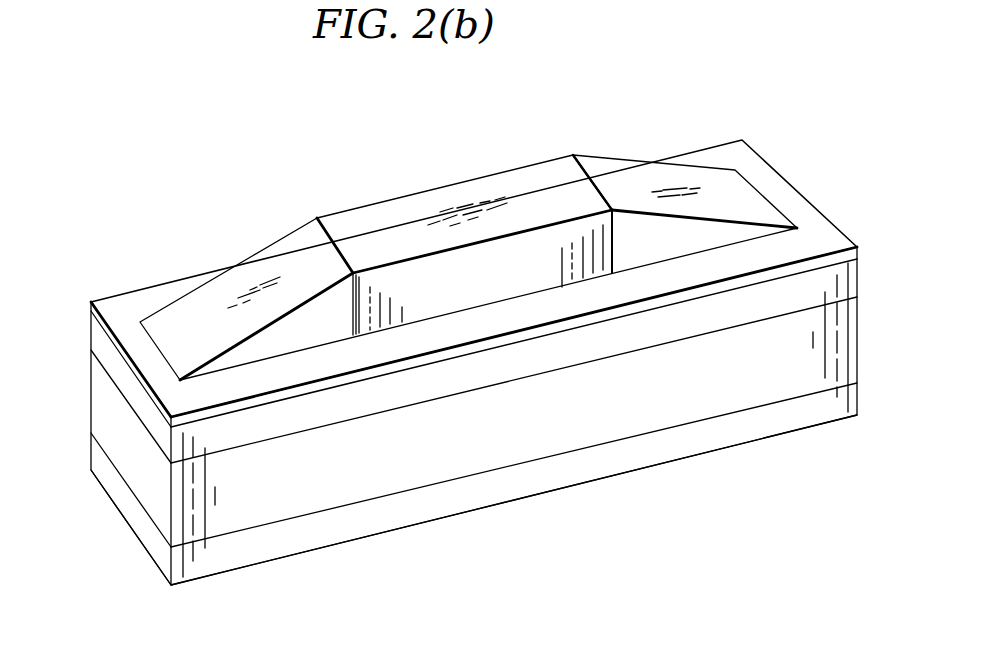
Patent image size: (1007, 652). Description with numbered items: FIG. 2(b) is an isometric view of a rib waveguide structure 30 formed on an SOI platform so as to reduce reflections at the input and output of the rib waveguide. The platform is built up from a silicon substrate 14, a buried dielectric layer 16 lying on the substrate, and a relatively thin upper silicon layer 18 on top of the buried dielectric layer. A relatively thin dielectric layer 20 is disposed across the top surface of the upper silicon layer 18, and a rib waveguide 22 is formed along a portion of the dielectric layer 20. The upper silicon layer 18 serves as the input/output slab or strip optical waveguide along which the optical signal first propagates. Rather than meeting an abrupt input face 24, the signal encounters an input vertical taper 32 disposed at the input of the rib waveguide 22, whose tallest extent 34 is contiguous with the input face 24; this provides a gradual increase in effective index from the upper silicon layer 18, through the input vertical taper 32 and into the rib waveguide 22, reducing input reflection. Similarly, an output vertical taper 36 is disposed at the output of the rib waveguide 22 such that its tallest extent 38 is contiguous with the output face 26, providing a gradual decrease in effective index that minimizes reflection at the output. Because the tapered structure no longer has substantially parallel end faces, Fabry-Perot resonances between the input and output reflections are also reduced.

The silicon substrate 14 is at (857, 397).
The buried dielectric layer 16 is at (857, 337).
The upper silicon layer 18 is at (858, 270).
The dielectric layer 20 is at (823, 230).
The rib waveguide structure 22 is at (470, 198).
The input face 24 is at (330, 243).
The output face 26 is at (593, 180).
The rib waveguide structure 30 is at (118, 530).
The input vertical taper 32 is at (215, 305).
The tallest extent of input vertical taper 34 is at (319, 223).
The output vertical taper 36 is at (728, 195).
The tallest extent of output vertical taper 38 is at (573, 153).